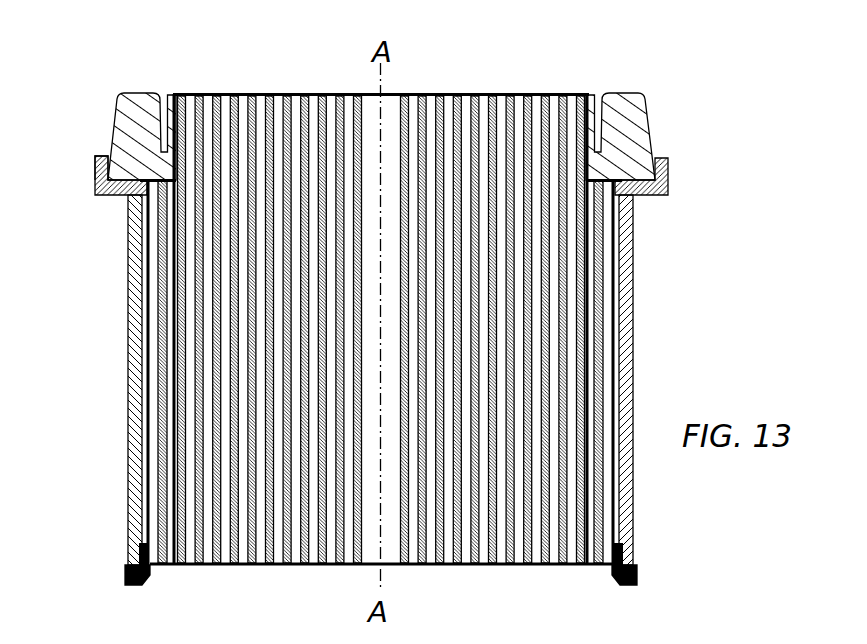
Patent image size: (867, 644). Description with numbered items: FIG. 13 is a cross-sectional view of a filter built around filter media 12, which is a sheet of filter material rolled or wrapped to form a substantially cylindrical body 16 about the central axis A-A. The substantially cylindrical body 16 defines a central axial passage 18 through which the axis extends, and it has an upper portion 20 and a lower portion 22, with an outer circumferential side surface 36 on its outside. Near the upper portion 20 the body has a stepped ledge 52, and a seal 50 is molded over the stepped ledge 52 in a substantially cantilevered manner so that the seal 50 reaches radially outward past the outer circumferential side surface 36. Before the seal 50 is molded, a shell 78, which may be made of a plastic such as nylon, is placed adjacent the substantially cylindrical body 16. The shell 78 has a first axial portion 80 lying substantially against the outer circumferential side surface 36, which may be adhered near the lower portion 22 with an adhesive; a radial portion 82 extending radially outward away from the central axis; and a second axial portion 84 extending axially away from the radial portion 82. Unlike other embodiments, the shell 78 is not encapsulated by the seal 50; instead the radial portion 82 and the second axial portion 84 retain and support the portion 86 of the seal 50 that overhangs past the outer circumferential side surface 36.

The filter media 12 is at (174, 459).
The substantially cylindrical body 16 is at (617, 361).
The axial passage 18 is at (393, 93).
The upper portion 20 is at (655, 310).
The lower portion 22 is at (114, 560).
The outer circumferential side surface 36 is at (145, 360).
The seal 50 is at (126, 107).
The stepped ledge 52 is at (143, 76).
The shell 78 is at (113, 355).
The first axial portion 80 is at (128, 272).
The radial portion 82 is at (118, 186).
The second axial portion 84 is at (95, 165).
The portion of the seal 86 is at (655, 150).